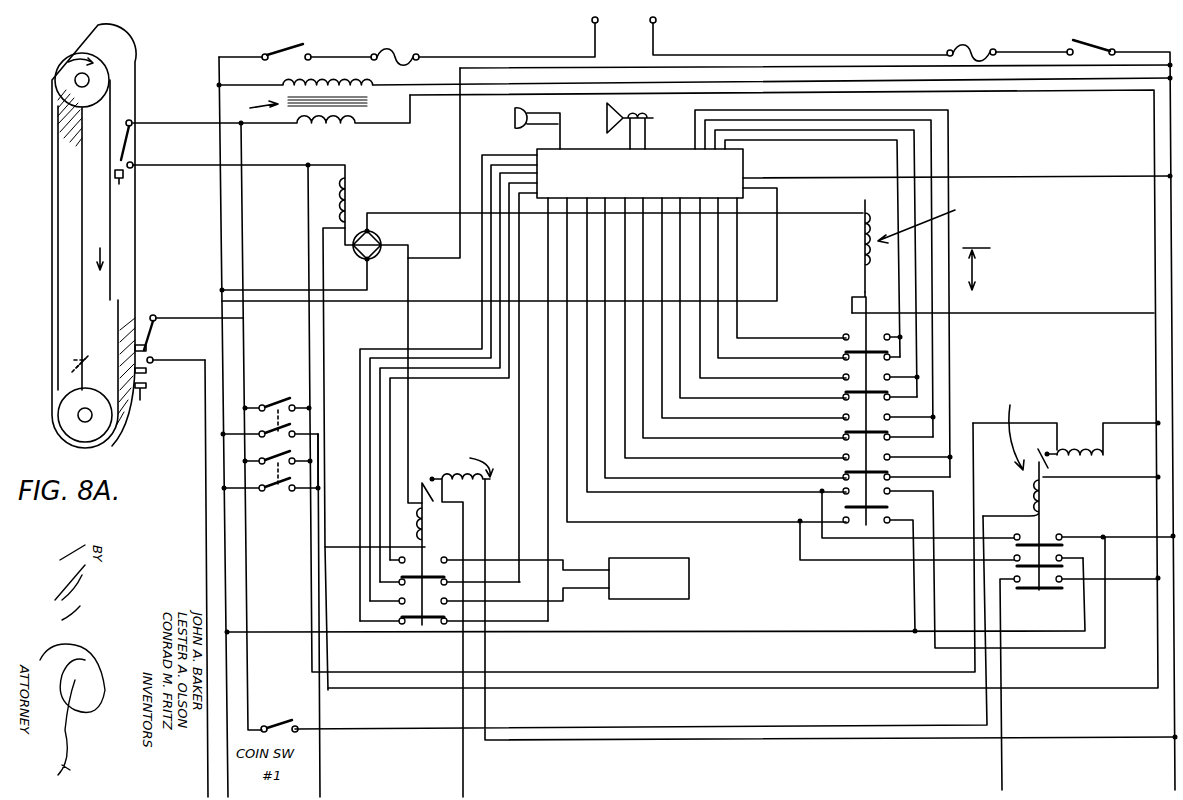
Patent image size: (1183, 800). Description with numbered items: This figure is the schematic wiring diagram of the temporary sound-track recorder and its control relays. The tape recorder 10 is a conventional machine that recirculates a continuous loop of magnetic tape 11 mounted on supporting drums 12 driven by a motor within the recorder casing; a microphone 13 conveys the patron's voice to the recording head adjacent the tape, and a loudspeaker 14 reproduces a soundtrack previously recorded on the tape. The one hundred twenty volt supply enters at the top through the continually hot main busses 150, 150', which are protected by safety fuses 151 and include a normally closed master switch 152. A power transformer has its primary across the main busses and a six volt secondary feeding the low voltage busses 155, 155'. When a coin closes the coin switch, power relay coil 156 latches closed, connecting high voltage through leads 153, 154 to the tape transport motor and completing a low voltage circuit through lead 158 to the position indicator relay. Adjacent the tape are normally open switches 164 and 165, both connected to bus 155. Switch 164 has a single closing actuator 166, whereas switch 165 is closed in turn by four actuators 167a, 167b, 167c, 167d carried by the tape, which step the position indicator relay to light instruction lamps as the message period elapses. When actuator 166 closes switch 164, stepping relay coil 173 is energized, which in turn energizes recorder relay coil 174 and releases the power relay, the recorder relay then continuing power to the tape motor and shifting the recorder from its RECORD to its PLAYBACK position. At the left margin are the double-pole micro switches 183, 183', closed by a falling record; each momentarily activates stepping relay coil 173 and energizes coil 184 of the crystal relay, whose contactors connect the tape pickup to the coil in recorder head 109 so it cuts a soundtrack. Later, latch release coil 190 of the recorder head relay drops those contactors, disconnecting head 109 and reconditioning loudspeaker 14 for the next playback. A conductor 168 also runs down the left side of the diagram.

The tape recorder 10 is at (756, 164).
The magnetic tape loop 11 is at (128, 232).
The supporting drums 12 is at (60, 88).
The microphone 13 is at (514, 121).
The loudspeaker 14 is at (607, 118).
The recorder head 109 is at (670, 600).
The main bus 150 is at (697, 407).
The main bus 150' is at (938, 395).
The safety fuse 151 is at (399, 49).
The master switch 152 is at (282, 48).
The lead 153 is at (797, 534).
The lead 154 is at (820, 511).
The low voltage bus 155 is at (271, 394).
The low voltage bus 155' is at (743, 389).
The power relay coil 156 is at (1047, 494).
The lead 158 is at (1000, 610).
The switch 164 is at (133, 130).
The switch 165 is at (158, 320).
The closing actuator 166 is at (123, 176).
The closing actuator 167a is at (146, 373).
The closing actuator 167b is at (141, 345).
The closing actuator 167c is at (72, 384).
The closing actuator 167d is at (141, 400).
The conductor 168 is at (206, 538).
The stepping relay coil 173 is at (352, 186).
The recorder relay coil 174 is at (860, 262).
The micro switch 183 is at (290, 395).
The micro switch 183' is at (292, 463).
The crystal relay coil 184 is at (426, 530).
The latch release coil 190 is at (473, 482).